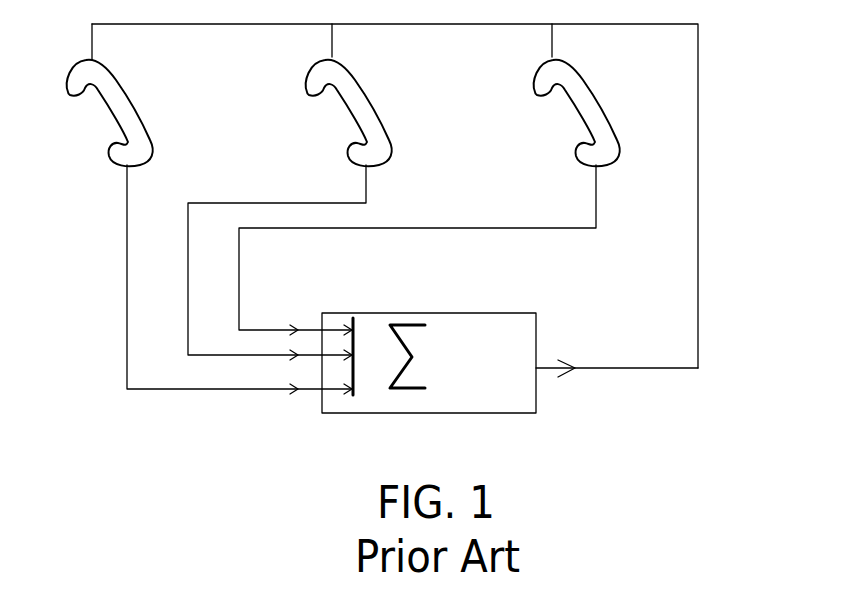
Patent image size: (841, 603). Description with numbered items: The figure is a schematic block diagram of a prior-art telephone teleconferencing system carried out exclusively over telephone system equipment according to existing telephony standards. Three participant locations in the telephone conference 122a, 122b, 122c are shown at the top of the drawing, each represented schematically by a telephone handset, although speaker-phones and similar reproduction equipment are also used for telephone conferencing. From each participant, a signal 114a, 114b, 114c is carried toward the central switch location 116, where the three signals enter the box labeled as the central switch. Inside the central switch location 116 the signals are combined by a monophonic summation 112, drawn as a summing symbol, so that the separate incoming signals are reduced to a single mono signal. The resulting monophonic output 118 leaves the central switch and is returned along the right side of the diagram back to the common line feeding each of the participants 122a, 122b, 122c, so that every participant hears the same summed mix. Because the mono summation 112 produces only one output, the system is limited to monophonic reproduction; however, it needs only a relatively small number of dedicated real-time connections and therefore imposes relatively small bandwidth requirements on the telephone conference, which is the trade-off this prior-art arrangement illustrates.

The participant in the telephone conference 122a is at (130, 123).
The participant in the telephone conference 122b is at (362, 115).
The participant in the telephone conference 122c is at (583, 98).
The signal 114a is at (127, 252).
The signal 114b is at (188, 333).
The signal 114c is at (239, 282).
The central switch location 116 is at (530, 313).
The monophonic summation 112 is at (419, 392).
The monophonic output 118 is at (627, 368).